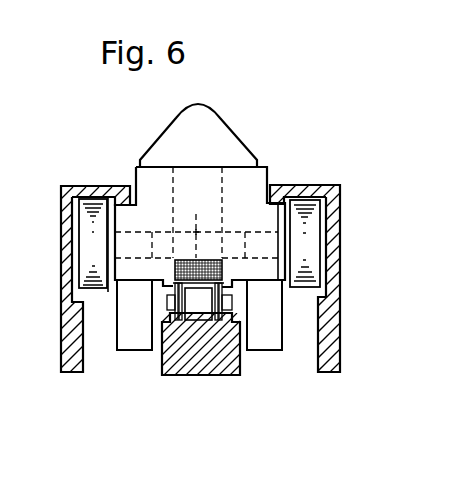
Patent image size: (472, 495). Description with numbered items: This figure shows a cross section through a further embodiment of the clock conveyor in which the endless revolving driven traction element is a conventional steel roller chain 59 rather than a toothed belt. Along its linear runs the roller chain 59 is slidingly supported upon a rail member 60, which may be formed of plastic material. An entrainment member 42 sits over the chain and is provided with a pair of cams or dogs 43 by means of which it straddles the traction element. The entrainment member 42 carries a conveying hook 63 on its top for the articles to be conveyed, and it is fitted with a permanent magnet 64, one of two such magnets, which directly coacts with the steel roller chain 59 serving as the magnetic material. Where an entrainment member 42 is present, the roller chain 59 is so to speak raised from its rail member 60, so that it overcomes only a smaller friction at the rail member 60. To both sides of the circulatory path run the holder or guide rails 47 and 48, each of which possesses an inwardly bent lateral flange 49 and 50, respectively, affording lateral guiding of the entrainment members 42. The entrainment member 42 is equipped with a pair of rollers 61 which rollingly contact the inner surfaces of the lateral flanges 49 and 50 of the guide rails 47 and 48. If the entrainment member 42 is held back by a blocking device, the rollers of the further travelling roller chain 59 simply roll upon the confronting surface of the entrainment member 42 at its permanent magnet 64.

The entrainment member 42 is at (267, 161).
The cams or dogs 43 is at (132, 340).
The guide rail 47 is at (75, 346).
The guide rail 48 is at (338, 252).
The lateral flange 49 is at (107, 193).
The lateral flange 50 is at (310, 188).
The roller chain 59 is at (198, 306).
The rail member 60 is at (218, 362).
The pair of rollers 61 is at (97, 200).
The conveying hook 63 is at (223, 131).
The permanent magnet 64 is at (196, 212).